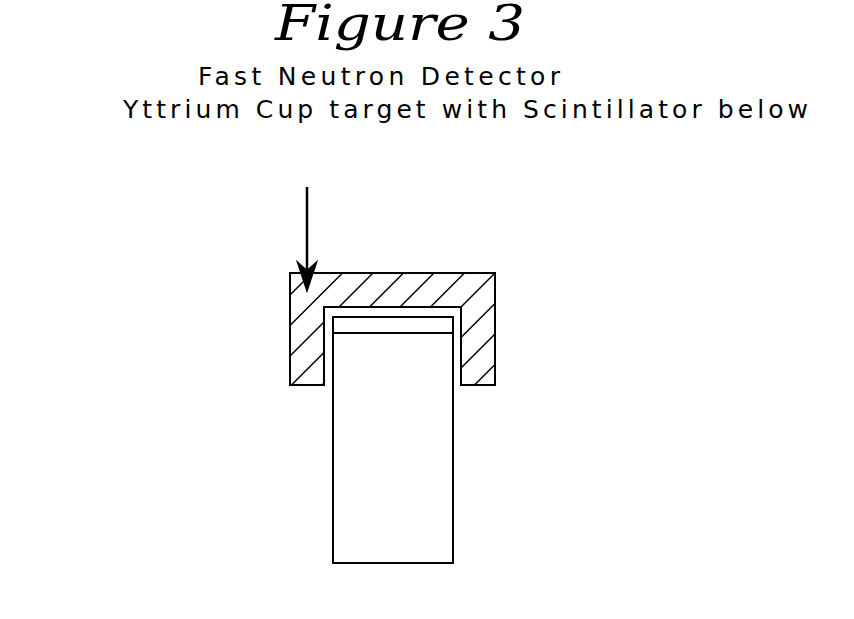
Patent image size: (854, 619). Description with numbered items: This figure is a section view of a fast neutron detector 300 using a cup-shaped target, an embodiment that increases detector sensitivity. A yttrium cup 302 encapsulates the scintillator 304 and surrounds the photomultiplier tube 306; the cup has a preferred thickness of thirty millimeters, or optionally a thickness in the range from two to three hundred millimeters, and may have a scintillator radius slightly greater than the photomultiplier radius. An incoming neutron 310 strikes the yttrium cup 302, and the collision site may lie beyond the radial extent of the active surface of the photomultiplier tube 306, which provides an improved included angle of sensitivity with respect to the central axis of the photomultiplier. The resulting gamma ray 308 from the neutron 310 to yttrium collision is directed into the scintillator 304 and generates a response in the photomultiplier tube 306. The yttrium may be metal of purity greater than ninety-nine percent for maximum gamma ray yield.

The fast neutron detector 300 is at (188, 197).
The yttrium cup 302 is at (289, 287).
The scintillator 304 is at (334, 322).
The photomultiplier tube 306 is at (333, 443).
The gamma ray 308 is at (360, 329).
The neutron 310 is at (308, 223).